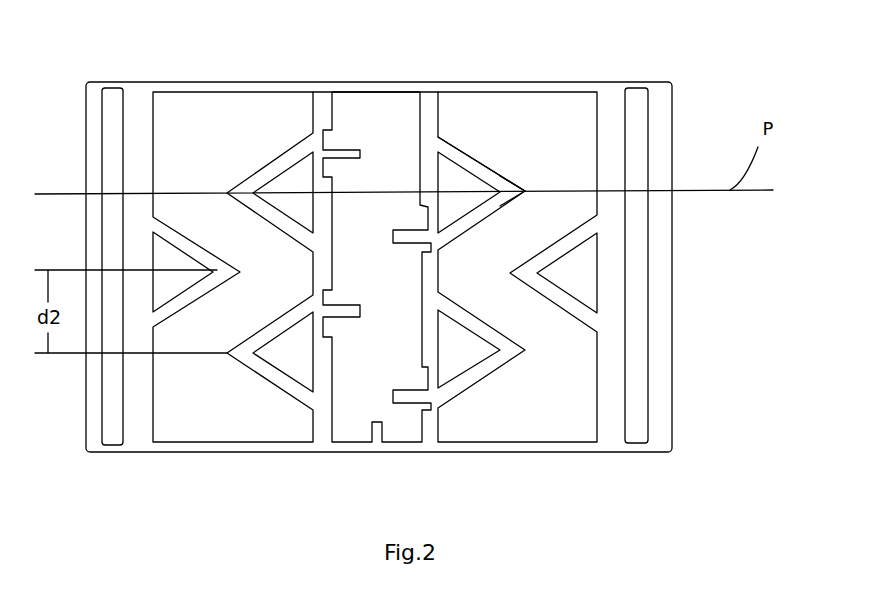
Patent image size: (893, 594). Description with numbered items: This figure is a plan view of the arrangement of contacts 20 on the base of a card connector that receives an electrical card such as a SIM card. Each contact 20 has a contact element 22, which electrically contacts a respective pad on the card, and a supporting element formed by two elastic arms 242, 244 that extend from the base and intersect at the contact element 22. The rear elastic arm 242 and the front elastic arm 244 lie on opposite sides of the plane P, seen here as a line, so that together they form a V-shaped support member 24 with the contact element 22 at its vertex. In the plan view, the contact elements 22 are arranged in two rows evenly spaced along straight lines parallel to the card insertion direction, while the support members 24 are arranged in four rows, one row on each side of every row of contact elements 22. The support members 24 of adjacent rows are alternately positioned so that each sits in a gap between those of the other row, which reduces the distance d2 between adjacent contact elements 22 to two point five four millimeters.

The contact 20 is at (265, 400).
The contact element 22 is at (525, 188).
The V-shaped support member 24 is at (433, 142).
The rear elastic arm 242 is at (478, 157).
The front elastic arm 244 is at (473, 217).